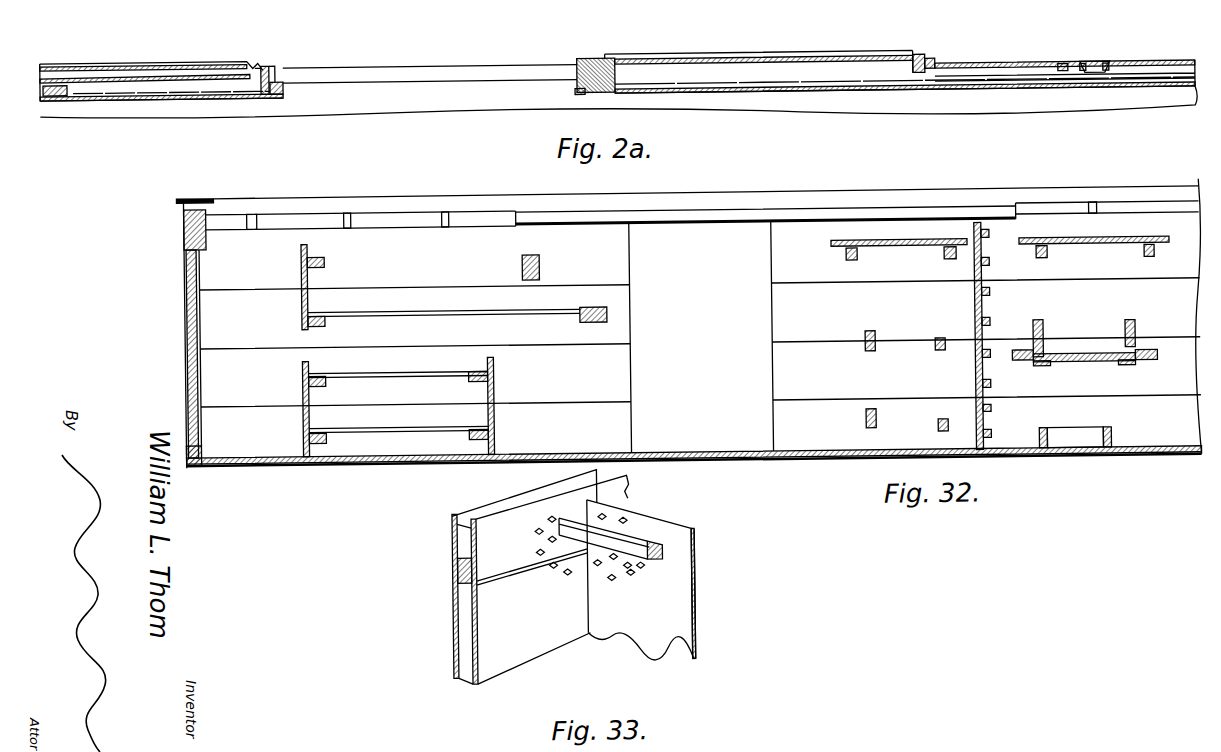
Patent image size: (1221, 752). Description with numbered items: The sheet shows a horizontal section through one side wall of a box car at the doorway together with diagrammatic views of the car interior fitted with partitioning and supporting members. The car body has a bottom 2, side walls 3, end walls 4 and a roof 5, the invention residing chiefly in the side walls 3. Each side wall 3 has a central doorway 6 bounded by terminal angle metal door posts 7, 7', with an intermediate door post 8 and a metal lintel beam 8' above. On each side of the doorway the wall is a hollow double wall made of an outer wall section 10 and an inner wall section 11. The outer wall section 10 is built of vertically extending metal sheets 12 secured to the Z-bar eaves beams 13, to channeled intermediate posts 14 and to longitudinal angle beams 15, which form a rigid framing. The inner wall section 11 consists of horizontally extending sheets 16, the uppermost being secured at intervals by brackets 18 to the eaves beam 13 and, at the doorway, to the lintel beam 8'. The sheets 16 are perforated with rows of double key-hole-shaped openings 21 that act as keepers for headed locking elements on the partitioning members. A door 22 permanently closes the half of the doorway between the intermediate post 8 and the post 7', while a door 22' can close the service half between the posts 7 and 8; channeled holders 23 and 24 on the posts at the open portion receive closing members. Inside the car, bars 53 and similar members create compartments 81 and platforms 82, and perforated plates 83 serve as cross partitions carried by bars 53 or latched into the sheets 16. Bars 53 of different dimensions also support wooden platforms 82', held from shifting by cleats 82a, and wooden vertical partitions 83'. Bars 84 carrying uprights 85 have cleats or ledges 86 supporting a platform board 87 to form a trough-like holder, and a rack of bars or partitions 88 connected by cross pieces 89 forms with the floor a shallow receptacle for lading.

In FIG. 2A, the bottom 2 is at (798, 100).
In FIG. 2A, the side walls 3 is at (963, 65).
In FIG. 32, the end walls 4 is at (185, 276).
In FIG. 32, the roof 5 is at (712, 193).
In FIG. 2A, the central doorway 6 is at (452, 77).
In FIG. 32, the central doorway 6 is at (701, 337).
In FIG. 2A, the terminal angle metal door post 7 is at (278, 68).
In FIG. 2A, the terminal angle metal door post 7' is at (931, 49).
In FIG. 2A, the intermediate door post 8 is at (586, 65).
In FIG. 32, the metal lintel beam 8' is at (765, 193).
In FIG. 2A, the outer wall section 10 is at (115, 72).
In FIG. 33, the outer wall section 10 is at (452, 601).
In FIG. 2A, the inner wall section 11 is at (216, 97).
In FIG. 33, the inner wall section 11 is at (498, 647).
In FIG. 2A, the vertically extending metal sheets 12 is at (83, 72).
In FIG. 33, the vertically extending metal sheets 12 is at (456, 666).
In FIG. 32, the Z-bar eaves beams 13 is at (314, 208).
In FIG. 2A, the channeled intermediate posts 14 is at (48, 79).
In FIG. 2A, the longitudinal angle beams 15 is at (153, 84).
In FIG. 33, the longitudinal angle beams 15 is at (456, 566).
In FIG. 2A, the longitudinally extending sheets 16 is at (176, 95).
In FIG. 32, the longitudinally extending sheets 16 is at (625, 271).
In FIG. 33, the longitudinally extending sheets 16 is at (487, 617).
In FIG. 32, the brackets 18 is at (250, 207).
In FIG. 33, the slots or openings 21 is at (548, 519).
In FIG. 2A, the door 22 is at (758, 50).
In FIG. 2A, the door 22' is at (150, 51).
In FIG. 2A, the channeled holder 23 is at (575, 92).
In FIG. 2A, the channeled holder 24 is at (284, 93).
In FIG. 32, the bars 53 is at (475, 382).
In FIG. 33, the bars 53 is at (645, 538).
In FIG. 32, the compartments 81 is at (447, 257).
In FIG. 32, the platforms 82 is at (458, 370).
In FIG. 32, the cleats 82a is at (838, 251).
In FIG. 32, the wooden platforms 82' is at (1024, 255).
In FIG. 32, the perforated plates 83 is at (399, 349).
In FIG. 33, the perforated plates 83 is at (662, 579).
In FIG. 32, the wooden vertical partitions 83' is at (967, 336).
In FIG. 32, the bars 84 is at (1020, 366).
In FIG. 32, the uprights or partitions 85 is at (1038, 330).
In FIG. 32, the cleats or ledges 86 is at (1040, 372).
In FIG. 32, the platform board or plate 87 is at (1085, 368).
In FIG. 32, the bars or partitions 88 is at (1038, 444).
In FIG. 32, the cross pieces 89 is at (1080, 451).